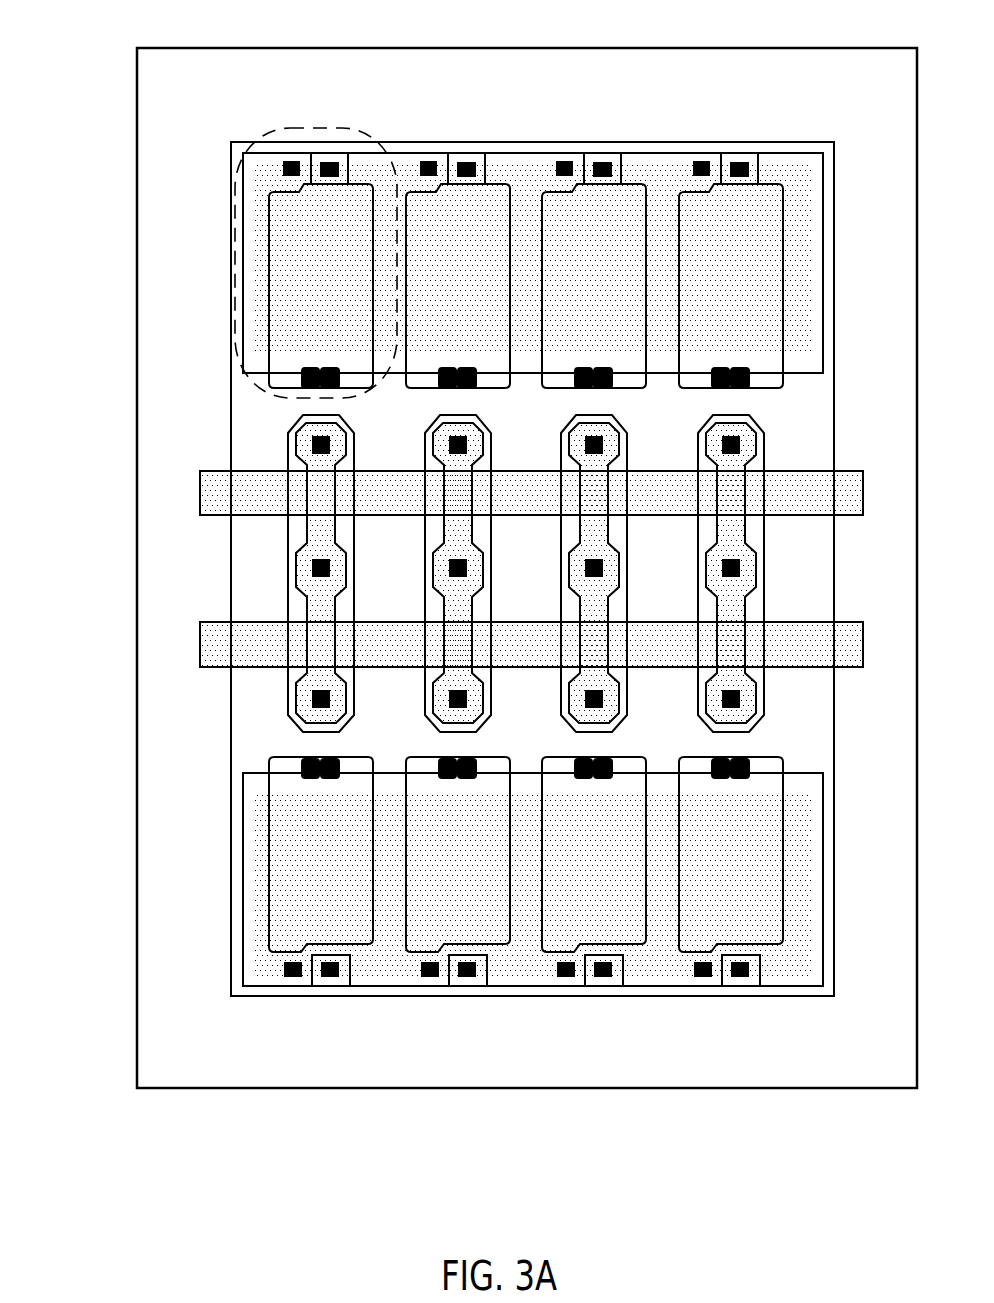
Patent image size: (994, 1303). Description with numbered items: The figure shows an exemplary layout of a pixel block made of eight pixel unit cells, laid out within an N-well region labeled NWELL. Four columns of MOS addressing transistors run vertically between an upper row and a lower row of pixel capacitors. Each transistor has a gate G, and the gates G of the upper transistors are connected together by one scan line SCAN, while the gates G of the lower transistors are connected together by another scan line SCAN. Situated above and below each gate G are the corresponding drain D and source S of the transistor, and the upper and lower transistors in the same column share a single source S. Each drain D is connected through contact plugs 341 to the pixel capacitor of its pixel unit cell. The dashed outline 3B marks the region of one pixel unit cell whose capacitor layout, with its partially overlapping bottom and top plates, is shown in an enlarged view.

The enlarged pixel capacitor layout region 3B is at (317, 128).
The contact plug 341 is at (303, 373).
The drain D is at (322, 450).
The gate G is at (318, 488).
The source S is at (313, 566).
The scan line SCAN is at (200, 490).
The N-well NWELL is at (527, 568).